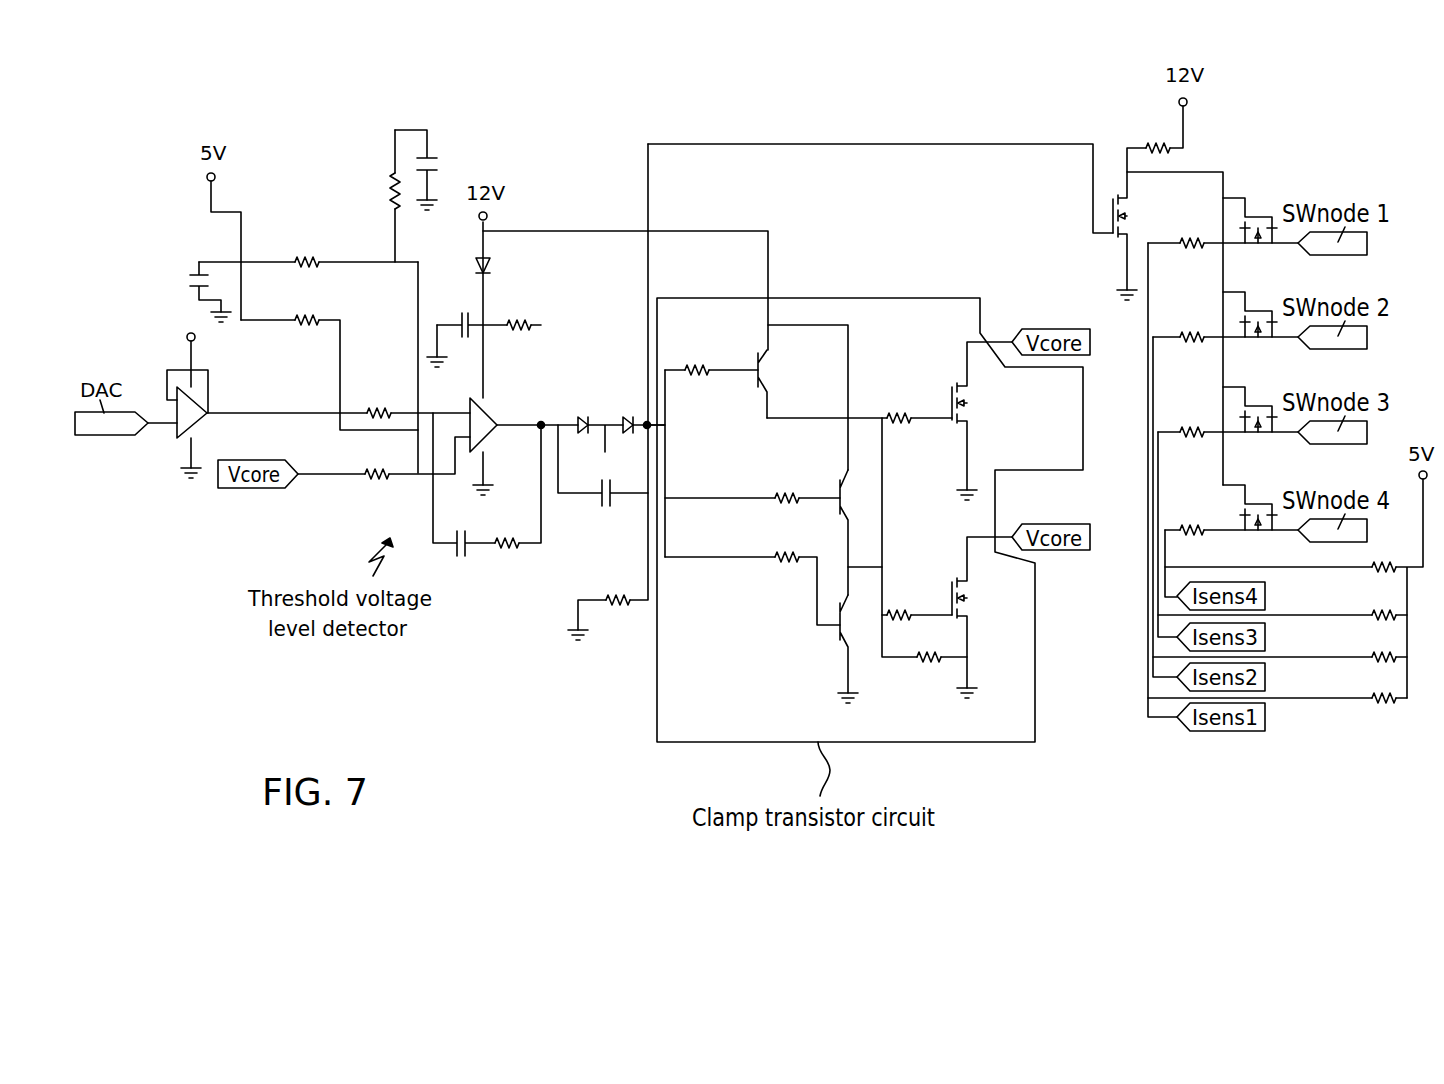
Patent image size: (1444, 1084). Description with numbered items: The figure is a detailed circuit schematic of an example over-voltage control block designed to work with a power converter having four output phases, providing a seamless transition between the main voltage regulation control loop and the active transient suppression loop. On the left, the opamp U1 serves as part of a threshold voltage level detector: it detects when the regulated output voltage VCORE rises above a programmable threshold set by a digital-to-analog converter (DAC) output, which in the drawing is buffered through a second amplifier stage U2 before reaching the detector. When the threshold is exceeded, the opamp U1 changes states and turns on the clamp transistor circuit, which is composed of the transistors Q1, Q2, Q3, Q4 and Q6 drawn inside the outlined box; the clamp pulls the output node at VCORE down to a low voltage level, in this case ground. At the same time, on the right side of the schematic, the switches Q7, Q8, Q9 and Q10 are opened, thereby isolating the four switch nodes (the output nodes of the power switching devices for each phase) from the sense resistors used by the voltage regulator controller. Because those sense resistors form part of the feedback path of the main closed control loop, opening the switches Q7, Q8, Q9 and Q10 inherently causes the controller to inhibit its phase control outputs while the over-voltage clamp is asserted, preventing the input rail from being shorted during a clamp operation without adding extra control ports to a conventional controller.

The opamp U1 is at (497, 358).
The DAC buffer amplifier U2 is at (206, 405).
The clamp transistor Q1 is at (982, 421).
The clamp transistor Q2 is at (982, 617).
The clamp transistor Q3 is at (735, 379).
The clamp transistor Q4 is at (773, 531).
The clamp transistor Q6 is at (773, 627).
The switch Q7 is at (1223, 234).
The switch Q8 is at (1225, 328).
The switch Q9 is at (1228, 423).
The switch Q10 is at (1231, 521).